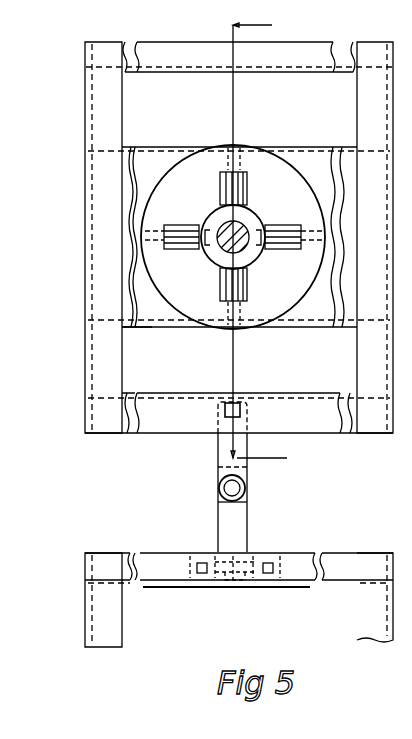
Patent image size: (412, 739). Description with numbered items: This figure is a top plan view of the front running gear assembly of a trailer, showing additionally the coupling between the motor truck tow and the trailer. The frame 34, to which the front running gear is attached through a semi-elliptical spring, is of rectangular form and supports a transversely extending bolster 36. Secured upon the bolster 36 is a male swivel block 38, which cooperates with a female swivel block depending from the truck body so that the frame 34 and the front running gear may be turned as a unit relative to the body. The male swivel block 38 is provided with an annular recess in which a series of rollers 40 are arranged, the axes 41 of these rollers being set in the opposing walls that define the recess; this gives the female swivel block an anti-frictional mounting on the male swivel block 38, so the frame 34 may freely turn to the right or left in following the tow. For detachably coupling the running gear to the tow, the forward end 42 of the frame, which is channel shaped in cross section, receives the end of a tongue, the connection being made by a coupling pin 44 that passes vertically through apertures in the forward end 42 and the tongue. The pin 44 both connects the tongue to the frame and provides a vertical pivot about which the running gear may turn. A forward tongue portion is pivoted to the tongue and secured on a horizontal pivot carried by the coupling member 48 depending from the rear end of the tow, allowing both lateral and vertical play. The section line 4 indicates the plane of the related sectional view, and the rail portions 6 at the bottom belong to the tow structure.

The section line 4- 4 is at (264, 242).
The rail 6 is at (163, 552).
The frame 34 is at (104, 243).
The bolster 36 is at (150, 328).
The male swivel block 38 is at (302, 292).
The rollers 40 is at (218, 194).
The axes 41 is at (153, 231).
The forward end of the frame 42 is at (197, 427).
The coupling pin 44 is at (241, 406).
The coupling member 48 is at (263, 551).